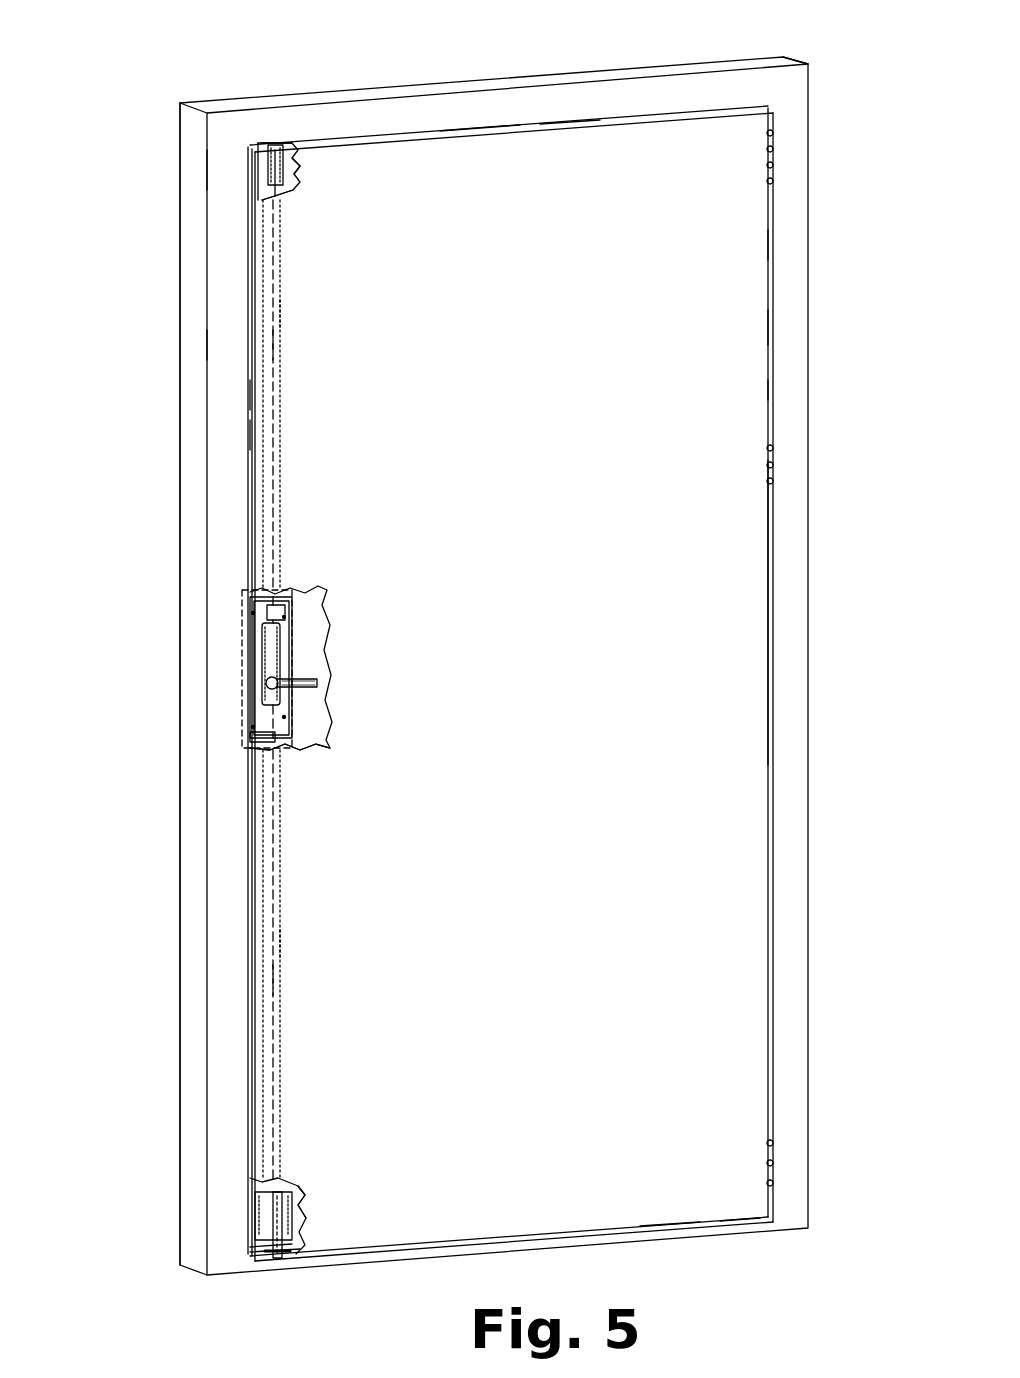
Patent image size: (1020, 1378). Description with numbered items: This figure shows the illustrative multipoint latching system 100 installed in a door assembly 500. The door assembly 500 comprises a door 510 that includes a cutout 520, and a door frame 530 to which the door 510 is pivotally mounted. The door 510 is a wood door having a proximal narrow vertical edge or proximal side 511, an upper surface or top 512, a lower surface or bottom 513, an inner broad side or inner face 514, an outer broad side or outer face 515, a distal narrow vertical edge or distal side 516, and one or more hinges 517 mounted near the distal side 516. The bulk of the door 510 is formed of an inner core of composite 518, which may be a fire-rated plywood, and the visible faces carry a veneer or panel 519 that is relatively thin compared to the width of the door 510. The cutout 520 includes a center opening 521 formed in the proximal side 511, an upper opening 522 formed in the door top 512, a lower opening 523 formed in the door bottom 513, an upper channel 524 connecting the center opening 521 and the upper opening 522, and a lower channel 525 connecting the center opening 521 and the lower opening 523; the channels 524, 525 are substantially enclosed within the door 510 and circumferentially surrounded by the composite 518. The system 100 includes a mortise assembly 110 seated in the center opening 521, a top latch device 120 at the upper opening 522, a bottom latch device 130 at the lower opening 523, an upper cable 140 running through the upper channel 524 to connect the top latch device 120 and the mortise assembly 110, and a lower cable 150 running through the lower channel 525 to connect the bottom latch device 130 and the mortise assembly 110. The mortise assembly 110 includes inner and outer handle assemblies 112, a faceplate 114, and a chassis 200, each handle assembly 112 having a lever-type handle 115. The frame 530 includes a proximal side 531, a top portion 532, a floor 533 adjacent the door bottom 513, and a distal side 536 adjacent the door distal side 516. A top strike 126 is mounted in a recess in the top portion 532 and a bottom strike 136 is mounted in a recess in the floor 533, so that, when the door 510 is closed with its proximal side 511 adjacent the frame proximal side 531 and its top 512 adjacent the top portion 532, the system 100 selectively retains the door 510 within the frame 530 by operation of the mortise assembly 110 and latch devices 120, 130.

The door assembly 500 is at (175, 60).
The door 510 is at (648, 105).
The door frame 530 is at (770, 40).
The multipoint locking system 100 is at (225, 345).
The mortise assembly 110 is at (318, 560).
The top latch device 120 is at (240, 170).
The top strike 126 is at (283, 140).
The bottom latch device 130 is at (312, 1235).
The bottom strike 136 is at (277, 1258).
The cable 140 is at (273, 340).
The cable 150 is at (273, 975).
The chassis 200 is at (295, 604).
The handle assembly 112 is at (322, 686).
The faceplate 114 is at (248, 632).
The handle 115 is at (300, 723).
The proximal side 511 is at (256, 393).
The top 512 is at (458, 130).
The bottom 513 is at (697, 1218).
The inner face 514 is at (728, 196).
The outer face 515 is at (740, 390).
The distal side 516 is at (770, 325).
The hinges 517 is at (765, 764).
The composite 518 is at (288, 193).
The panel 519 is at (305, 172).
The cutout 520 is at (293, 148).
The center opening 521 is at (300, 740).
The upper opening 522 is at (285, 196).
The lower opening 523 is at (306, 1208).
The upper channel 524 is at (279, 313).
The lower channel 525 is at (280, 942).
The proximal side 531 is at (258, 434).
The top portion 532 is at (540, 128).
The floor 533 is at (725, 1218).
The distal side 536 is at (768, 243).